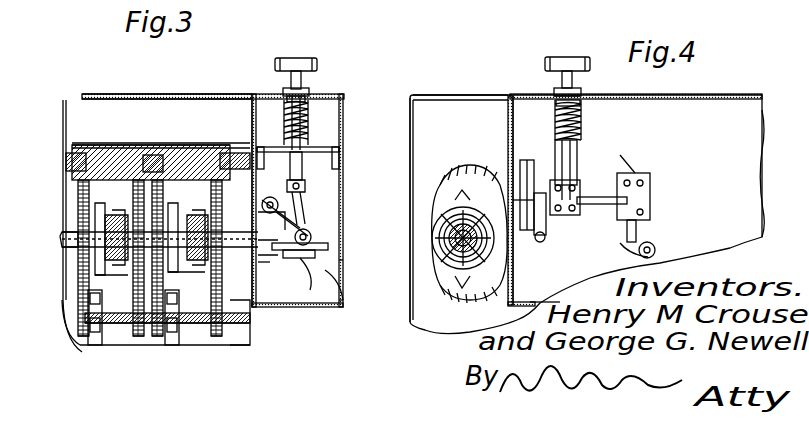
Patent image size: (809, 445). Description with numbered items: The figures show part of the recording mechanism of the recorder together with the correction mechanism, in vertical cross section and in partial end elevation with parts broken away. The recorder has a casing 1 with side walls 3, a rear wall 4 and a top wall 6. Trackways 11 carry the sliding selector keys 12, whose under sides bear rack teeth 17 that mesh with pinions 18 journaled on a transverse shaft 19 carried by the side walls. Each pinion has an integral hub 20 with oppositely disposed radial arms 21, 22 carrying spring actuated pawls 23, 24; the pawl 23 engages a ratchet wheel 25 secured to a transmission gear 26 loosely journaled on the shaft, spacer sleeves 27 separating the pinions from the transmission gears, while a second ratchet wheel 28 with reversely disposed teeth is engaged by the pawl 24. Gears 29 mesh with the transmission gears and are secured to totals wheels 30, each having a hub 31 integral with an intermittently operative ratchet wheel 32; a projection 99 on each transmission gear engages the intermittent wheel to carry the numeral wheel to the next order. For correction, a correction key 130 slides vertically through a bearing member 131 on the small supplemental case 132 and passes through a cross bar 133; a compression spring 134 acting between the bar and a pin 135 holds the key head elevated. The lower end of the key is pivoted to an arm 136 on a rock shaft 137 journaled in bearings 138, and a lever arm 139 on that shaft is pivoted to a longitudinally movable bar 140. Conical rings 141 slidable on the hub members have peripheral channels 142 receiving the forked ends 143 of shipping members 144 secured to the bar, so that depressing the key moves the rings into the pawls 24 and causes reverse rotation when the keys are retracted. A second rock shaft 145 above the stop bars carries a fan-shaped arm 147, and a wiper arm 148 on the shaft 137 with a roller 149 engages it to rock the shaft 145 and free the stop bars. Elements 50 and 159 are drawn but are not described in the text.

In FIG. 4, the casing 1 is at (453, 95).
In FIG. 3, the side walls 3 is at (252, 97).
In FIG. 4, the side walls 3 is at (437, 95).
In FIG. 3, the rear wall 4 is at (131, 95).
In FIG. 3, the top wall 6 is at (106, 95).
In FIG. 4, the top wall 6 is at (475, 95).
In FIG. 3, the trackways 11 is at (83, 152).
In FIG. 3, the selector keys 12 is at (145, 156).
In FIG. 3, the rack teeth 17 is at (160, 150).
In FIG. 3, the pinions 18 is at (150, 316).
In FIG. 3, the shaft 19 is at (63, 150).
In FIG. 4, the shaft 19 is at (452, 236).
In FIG. 3, the hub 20 is at (344, 270).
In FIG. 4, the hub 20 is at (445, 258).
In FIG. 3, the radial arm 21 is at (113, 222).
In FIG. 4, the radial arm 21 is at (470, 205).
In FIG. 3, the radial arm 22 is at (140, 272).
In FIG. 4, the radial arm 22 is at (437, 295).
In FIG. 3, the pawl 23 is at (141, 258).
In FIG. 4, the pawl 23 is at (466, 168).
In FIG. 3, the pawl 24 is at (112, 300).
In FIG. 4, the pawl 24 is at (443, 280).
In FIG. 3, the ratchet wheel 25 is at (85, 335).
In FIG. 4, the ratchet wheel 25 is at (513, 165).
In FIG. 3, the transmission gear 26 is at (106, 146).
In FIG. 4, the transmission gear 26 is at (445, 160).
In FIG. 3, the spacer sleeves 27 is at (152, 143).
In FIG. 3, the second ratchet wheel 28 is at (120, 340).
In FIG. 4, the second ratchet wheel 28 is at (513, 178).
In FIG. 3, the gears 29 is at (100, 348).
In FIG. 3, the totals wheel 30 is at (185, 345).
In FIG. 3, the hub 31 is at (222, 345).
In FIG. 3, the intermittently operative ratchet wheel 32 is at (95, 345).
In FIG. 3, the rack 50 is at (130, 345).
In FIG. 3, the projection 99 is at (88, 144).
In FIG. 3, the correction key 130 is at (318, 65).
In FIG. 4, the correction key 130 is at (567, 62).
In FIG. 3, the bearing member 131 is at (310, 94).
In FIG. 4, the bearing member 131 is at (583, 96).
In FIG. 3, the supplemental case 132 is at (310, 128).
In FIG. 4, the supplemental case 132 is at (678, 133).
In FIG. 3, the cross bar 133 is at (325, 150).
In FIG. 4, the cross bar 133 is at (556, 135).
In FIG. 3, the compression spring 134 is at (308, 133).
In FIG. 4, the compression spring 134 is at (583, 130).
In FIG. 3, the pin 135 is at (283, 100).
In FIG. 4, the pin 135 is at (560, 100).
In FIG. 3, the arm 136 is at (318, 178).
In FIG. 4, the arm 136 is at (578, 210).
In FIG. 3, the rock shaft 137 is at (270, 196).
In FIG. 4, the rock shaft 137 is at (670, 120).
In FIG. 3, the bearings 138 is at (275, 172).
In FIG. 4, the bearings 138 is at (662, 170).
In FIG. 3, the lever arm 139 is at (305, 194).
In FIG. 3, the longitudinally movable bar 140 is at (310, 286).
In FIG. 4, the longitudinally movable bar 140 is at (550, 240).
In FIG. 3, the conical rings 141 is at (277, 264).
In FIG. 4, the conical rings 141 is at (447, 245).
In FIG. 3, the peripheral channels 142 is at (277, 283).
In FIG. 3, the forked ends 143 is at (360, 290).
In FIG. 4, the forked ends 143 is at (513, 194).
In FIG. 4, the shipping members 144 is at (580, 200).
In FIG. 3, the rock shaft 145 is at (345, 303).
In FIG. 4, the rock shaft 145 is at (655, 248).
In FIG. 3, the fan-shaped arm 147 is at (313, 247).
In FIG. 4, the fan-shaped arm 147 is at (640, 240).
In FIG. 3, the wiper arm 148 is at (300, 223).
In FIG. 4, the wiper arm 148 is at (655, 190).
In FIG. 3, the roller 149 is at (287, 203).
In FIG. 4, the roller 149 is at (660, 205).
In FIG. 4, the pawl 159 is at (539, 243).